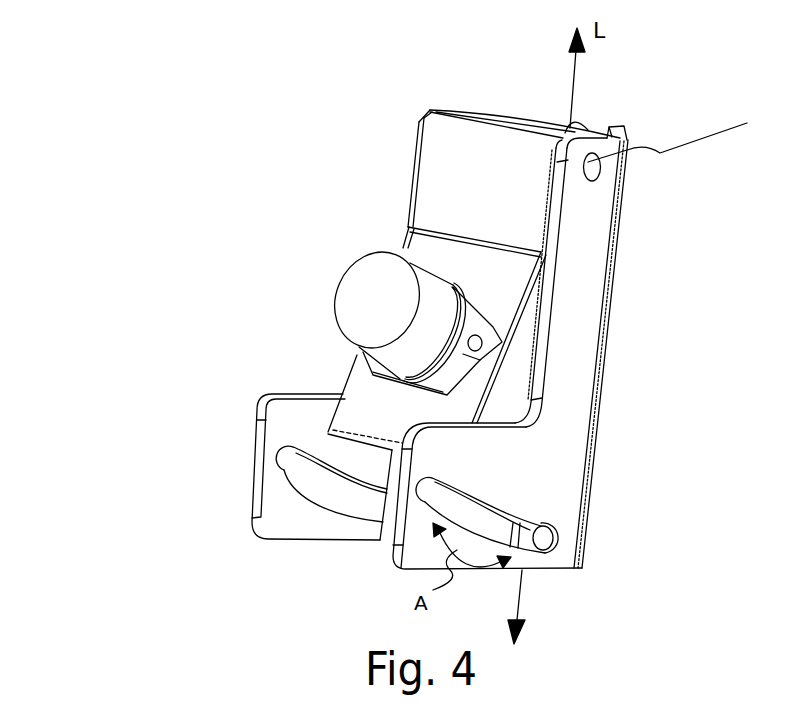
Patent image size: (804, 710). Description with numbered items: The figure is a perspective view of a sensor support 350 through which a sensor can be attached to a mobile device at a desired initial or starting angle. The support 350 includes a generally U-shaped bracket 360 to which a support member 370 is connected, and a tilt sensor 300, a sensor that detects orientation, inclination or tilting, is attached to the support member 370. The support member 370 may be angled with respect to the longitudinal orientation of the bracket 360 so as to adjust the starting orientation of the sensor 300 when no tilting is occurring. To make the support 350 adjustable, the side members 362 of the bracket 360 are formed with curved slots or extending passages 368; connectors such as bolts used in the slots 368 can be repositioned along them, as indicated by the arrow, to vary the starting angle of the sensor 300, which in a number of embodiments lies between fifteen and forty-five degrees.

The tilt sensor 300 is at (334, 270).
The support 350 is at (628, 350).
The bracket 360 is at (622, 243).
The side members 362 is at (267, 410).
The slots 368 is at (318, 504).
The support member 370 is at (417, 250).